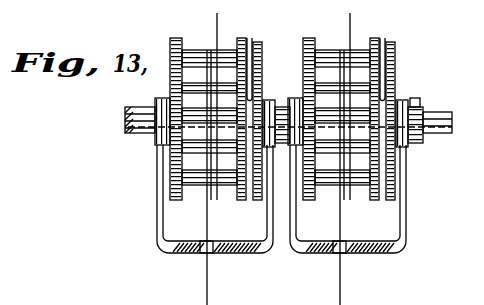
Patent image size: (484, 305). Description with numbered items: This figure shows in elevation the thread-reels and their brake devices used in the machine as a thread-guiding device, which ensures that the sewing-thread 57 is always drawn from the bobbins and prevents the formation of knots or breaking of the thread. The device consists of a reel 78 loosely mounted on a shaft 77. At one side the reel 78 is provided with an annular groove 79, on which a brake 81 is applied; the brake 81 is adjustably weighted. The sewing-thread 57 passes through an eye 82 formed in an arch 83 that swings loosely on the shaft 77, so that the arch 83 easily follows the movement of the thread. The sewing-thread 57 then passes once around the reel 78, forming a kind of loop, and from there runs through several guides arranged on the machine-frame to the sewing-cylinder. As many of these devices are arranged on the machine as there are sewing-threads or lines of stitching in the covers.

The sewing-thread 57 is at (219, 26).
The shaft 77 is at (139, 134).
The reel 78 is at (303, 52).
The annular groove 79 is at (248, 198).
The brake 81 is at (254, 83).
The eye 82 is at (209, 250).
The arch 83 is at (162, 237).